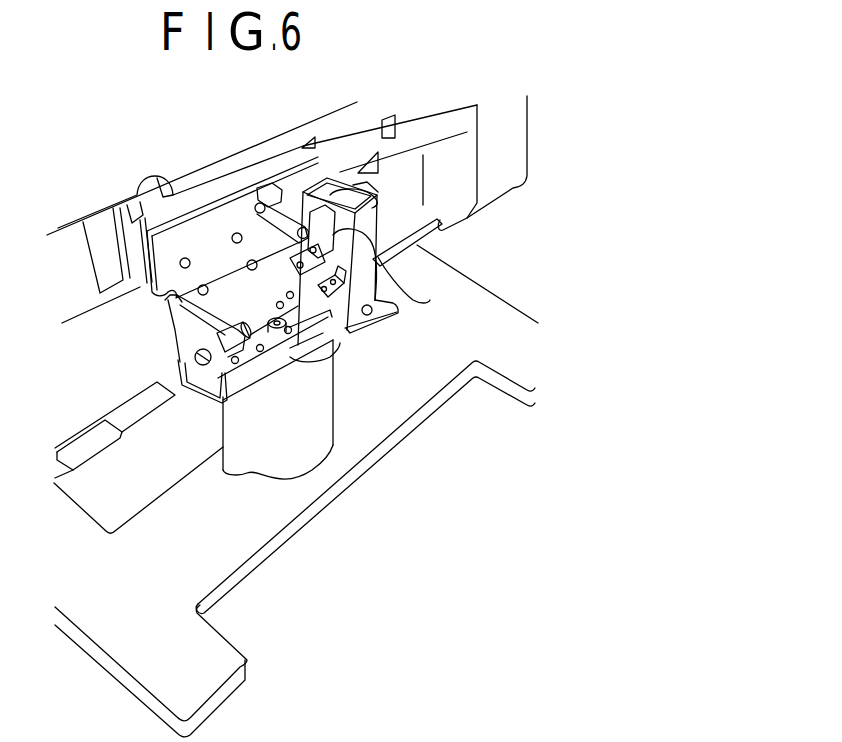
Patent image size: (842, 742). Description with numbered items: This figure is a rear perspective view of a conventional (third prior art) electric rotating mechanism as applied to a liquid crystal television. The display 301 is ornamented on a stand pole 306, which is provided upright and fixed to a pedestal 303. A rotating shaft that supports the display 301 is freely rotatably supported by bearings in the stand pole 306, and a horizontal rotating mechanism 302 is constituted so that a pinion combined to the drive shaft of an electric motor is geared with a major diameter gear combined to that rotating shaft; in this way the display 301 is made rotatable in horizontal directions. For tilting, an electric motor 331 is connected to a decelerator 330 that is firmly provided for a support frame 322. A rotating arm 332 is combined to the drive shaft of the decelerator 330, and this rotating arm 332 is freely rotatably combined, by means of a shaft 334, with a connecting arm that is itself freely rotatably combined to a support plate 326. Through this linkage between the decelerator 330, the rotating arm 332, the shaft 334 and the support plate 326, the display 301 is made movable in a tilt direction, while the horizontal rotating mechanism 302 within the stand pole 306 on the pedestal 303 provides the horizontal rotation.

The display 301 is at (210, 162).
The horizontal rotating mechanism 302 is at (323, 445).
The pedestal 303 is at (393, 402).
The stand pole 306 is at (261, 462).
The support frame 322 is at (207, 397).
The support plate 326 is at (202, 236).
The decelerator 330 is at (342, 198).
The electric motor 331 is at (390, 205).
The rotating arm 332 is at (380, 265).
The shaft 334 is at (250, 208).